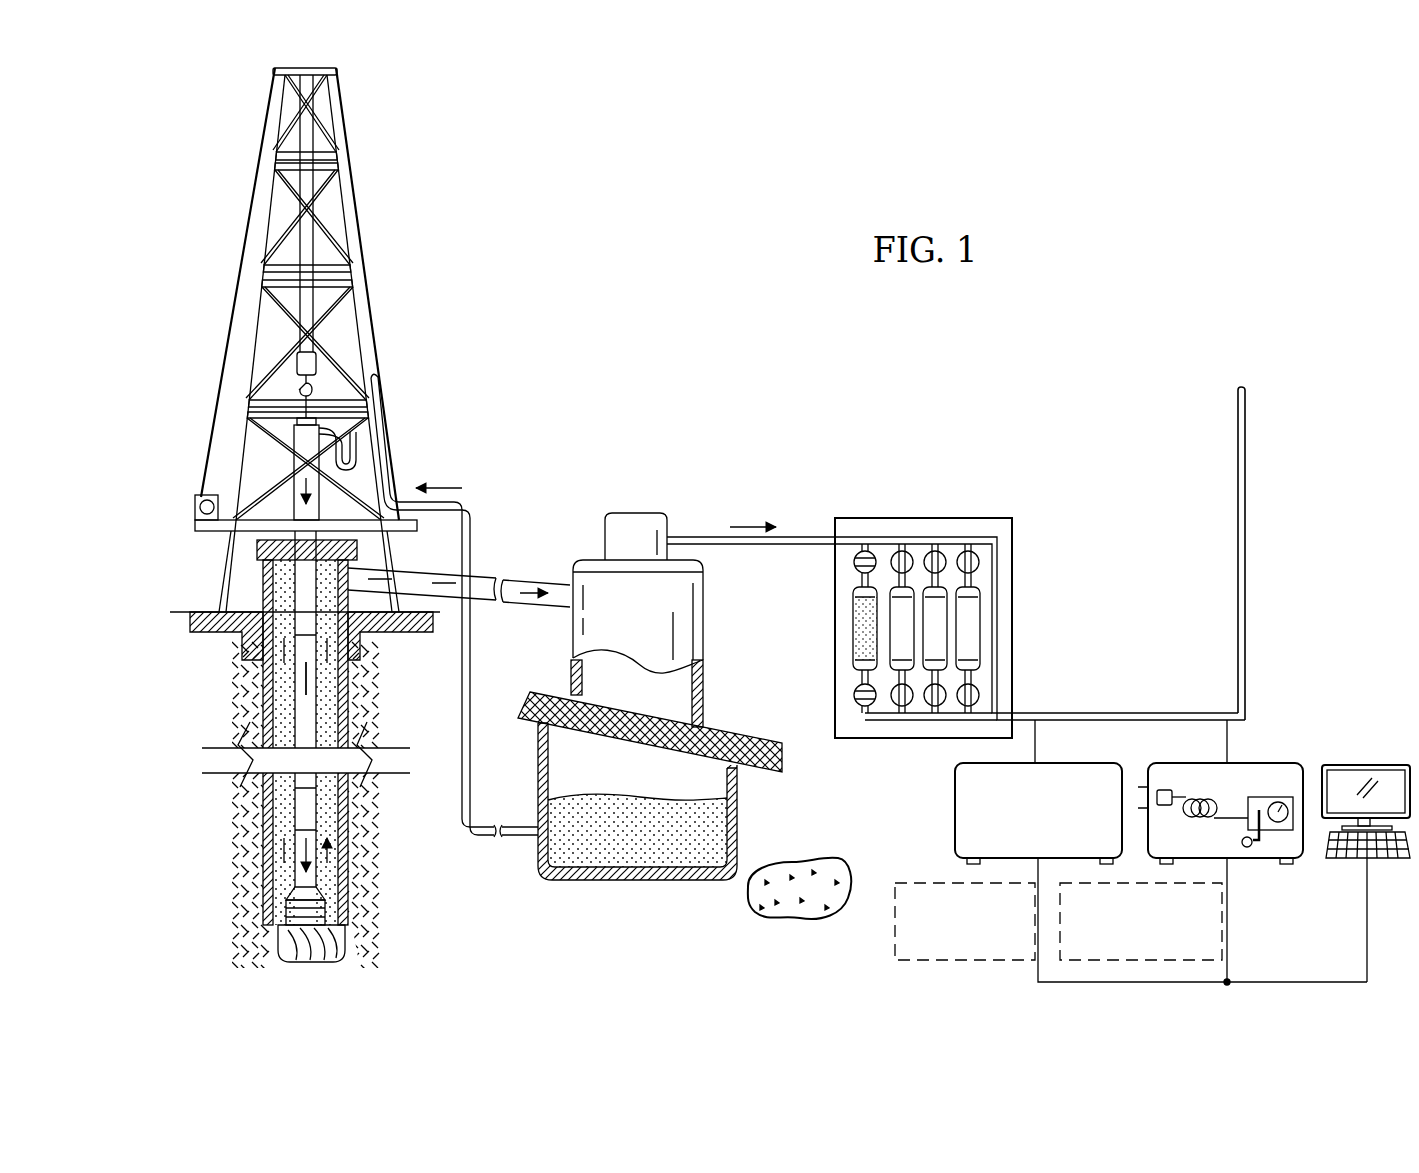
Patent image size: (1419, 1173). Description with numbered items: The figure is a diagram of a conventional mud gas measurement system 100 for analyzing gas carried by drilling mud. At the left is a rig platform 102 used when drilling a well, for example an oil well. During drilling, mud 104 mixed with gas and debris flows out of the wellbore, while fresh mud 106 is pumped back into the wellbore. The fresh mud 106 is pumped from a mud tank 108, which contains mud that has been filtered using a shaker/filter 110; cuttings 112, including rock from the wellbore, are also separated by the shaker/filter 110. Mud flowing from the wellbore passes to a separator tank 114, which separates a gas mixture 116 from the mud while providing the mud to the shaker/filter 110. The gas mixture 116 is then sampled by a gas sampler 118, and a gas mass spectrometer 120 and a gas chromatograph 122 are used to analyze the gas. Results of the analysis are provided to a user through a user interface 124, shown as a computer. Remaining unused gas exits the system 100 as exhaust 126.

The mud gas measurement system 100 is at (1108, 261).
The rig platform 102 is at (256, 169).
The mud 104 is at (283, 856).
The fresh mud 106 is at (443, 488).
The mud tank 108 is at (617, 880).
The shaker/filter 110 is at (745, 745).
The cuttings 112 is at (827, 862).
The separator tank 114 is at (637, 513).
The gas mixture 116 is at (752, 525).
The gas sampler 118 is at (1012, 615).
The gas mass spectrometer 120 is at (954, 812).
The gas chromatograph 122 is at (1261, 762).
The user interface 124 is at (1380, 860).
The exhaust 126 is at (1246, 407).